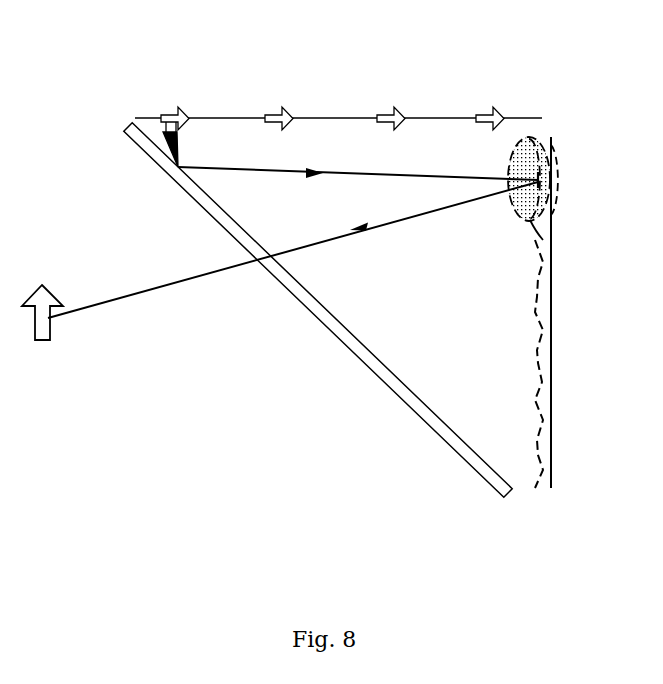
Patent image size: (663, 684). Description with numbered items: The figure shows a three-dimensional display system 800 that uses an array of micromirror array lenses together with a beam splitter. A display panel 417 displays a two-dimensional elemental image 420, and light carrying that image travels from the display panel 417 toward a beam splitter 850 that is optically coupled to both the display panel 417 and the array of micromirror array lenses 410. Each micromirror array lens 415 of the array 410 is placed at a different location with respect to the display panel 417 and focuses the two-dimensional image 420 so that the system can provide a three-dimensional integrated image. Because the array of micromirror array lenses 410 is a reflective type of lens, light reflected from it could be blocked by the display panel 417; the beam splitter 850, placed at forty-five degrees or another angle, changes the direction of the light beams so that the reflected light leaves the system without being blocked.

The three-dimensional display system 800 is at (445, 77).
The display panel 417 is at (527, 112).
The two-dimensional image 420 is at (165, 113).
The beam splitter 850 is at (342, 353).
The micromirror array lens 415 is at (557, 160).
The array of micromirror array lenses 410 is at (540, 490).